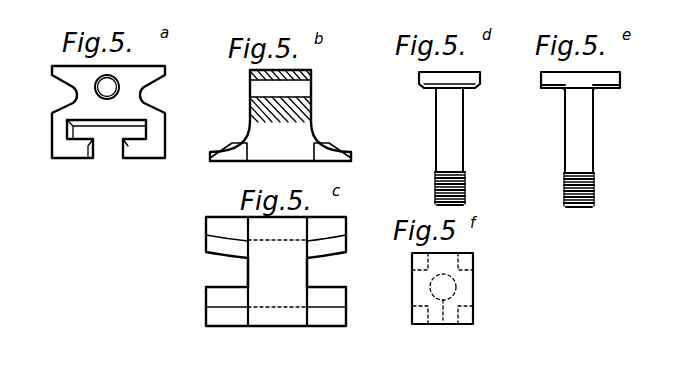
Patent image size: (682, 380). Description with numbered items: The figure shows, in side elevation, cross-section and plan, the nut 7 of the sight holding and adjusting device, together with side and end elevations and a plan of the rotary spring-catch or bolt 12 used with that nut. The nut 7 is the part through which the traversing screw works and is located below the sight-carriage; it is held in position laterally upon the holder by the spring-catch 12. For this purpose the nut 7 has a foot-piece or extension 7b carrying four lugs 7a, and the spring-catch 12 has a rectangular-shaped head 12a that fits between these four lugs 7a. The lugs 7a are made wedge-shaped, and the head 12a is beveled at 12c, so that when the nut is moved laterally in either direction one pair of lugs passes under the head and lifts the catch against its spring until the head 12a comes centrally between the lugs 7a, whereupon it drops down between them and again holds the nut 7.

In FIG. 5A, the nut 7 is at (138, 77).
In FIG. 5B, the nut 7 is at (312, 116).
In FIG. 5C, the nut 7 is at (276, 271).
In FIG. 5A, the lugs 7a is at (78, 148).
In FIG. 5B, the lugs 7a is at (317, 152).
In FIG. 5C, the lugs 7a is at (330, 297).
In FIG. 5A, the foot-piece or extension 7b is at (64, 130).
In FIG. 5D, the rotary spring-catch or bolt 12 is at (450, 146).
In FIG. 5E, the rotary spring-catch or bolt 12 is at (580, 145).
In FIG. 5F, the rotary spring-catch or bolt 12 is at (442, 313).
In FIG. 5D, the rectangular-shaped head 12a is at (453, 80).
In FIG. 5E, the rectangular-shaped head 12a is at (591, 80).
In FIG. 5F, the rectangular-shaped head 12a is at (439, 263).
In FIG. 5D, the bevel 12c is at (497, 88).
In FIG. 5E, the bevel 12c is at (542, 88).
In FIG. 5F, the bevel 12c is at (472, 313).